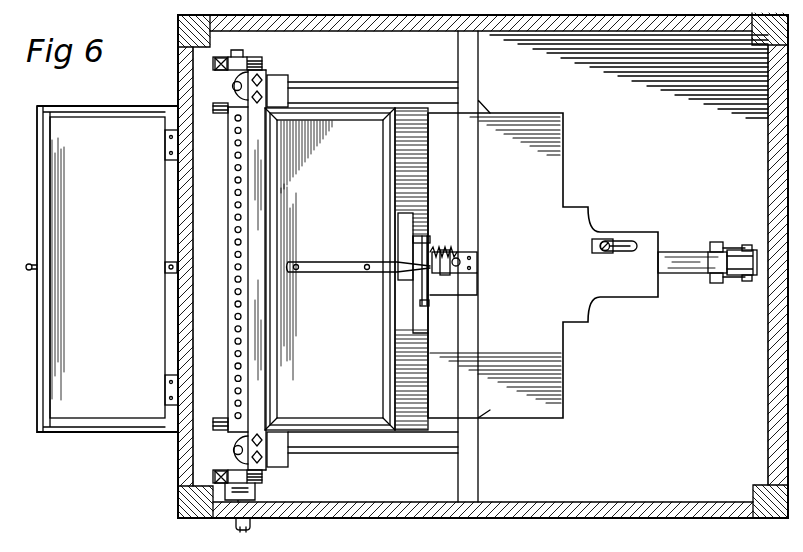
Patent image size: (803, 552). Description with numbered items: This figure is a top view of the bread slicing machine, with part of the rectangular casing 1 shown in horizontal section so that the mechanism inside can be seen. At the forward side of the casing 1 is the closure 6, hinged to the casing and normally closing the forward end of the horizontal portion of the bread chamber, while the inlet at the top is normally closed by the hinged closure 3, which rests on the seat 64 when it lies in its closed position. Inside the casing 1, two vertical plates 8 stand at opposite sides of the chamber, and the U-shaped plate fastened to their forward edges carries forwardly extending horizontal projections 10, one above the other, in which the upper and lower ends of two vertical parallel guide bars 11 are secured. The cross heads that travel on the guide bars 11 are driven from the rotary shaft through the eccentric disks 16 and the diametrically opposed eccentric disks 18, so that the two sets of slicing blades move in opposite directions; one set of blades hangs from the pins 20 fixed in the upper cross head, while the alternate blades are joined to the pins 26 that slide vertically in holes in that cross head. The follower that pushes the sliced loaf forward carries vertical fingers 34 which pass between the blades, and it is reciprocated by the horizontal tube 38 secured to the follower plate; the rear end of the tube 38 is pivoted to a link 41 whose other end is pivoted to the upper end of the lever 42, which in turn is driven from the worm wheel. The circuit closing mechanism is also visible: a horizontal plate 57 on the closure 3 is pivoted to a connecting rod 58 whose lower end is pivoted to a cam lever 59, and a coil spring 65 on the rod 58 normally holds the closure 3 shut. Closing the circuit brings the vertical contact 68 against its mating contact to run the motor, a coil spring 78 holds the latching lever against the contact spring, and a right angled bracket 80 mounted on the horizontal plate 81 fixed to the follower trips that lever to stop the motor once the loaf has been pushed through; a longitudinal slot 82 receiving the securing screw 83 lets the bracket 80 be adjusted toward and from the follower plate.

The casing 1 is at (392, 512).
The closure 3 is at (330, 269).
The closure 6 is at (102, 269).
The vertical plates 8 is at (373, 96).
The horizontal projections 10 is at (226, 85).
The guide bars 11 is at (241, 83).
The eccentric disks 16 is at (253, 60).
The eccentric disks 18 is at (217, 103).
The pins 20 is at (233, 131).
The pins 26 is at (234, 119).
The vertical fingers 34 is at (424, 162).
The tube 38 is at (682, 255).
The link 41 is at (737, 247).
The lever 42 is at (752, 277).
The horizontal plate 57 is at (332, 265).
The connecting rod 58 is at (426, 237).
The cam lever 59 is at (430, 292).
The seat 64 is at (367, 113).
The coil spring 65 is at (413, 240).
The vertical contact 68 is at (457, 261).
The coil spring 78 is at (447, 248).
The right angled bracket 80 is at (600, 232).
The horizontal plate 81 is at (543, 265).
The longitudinal slot 82 is at (627, 243).
The securing screw 83 is at (608, 254).